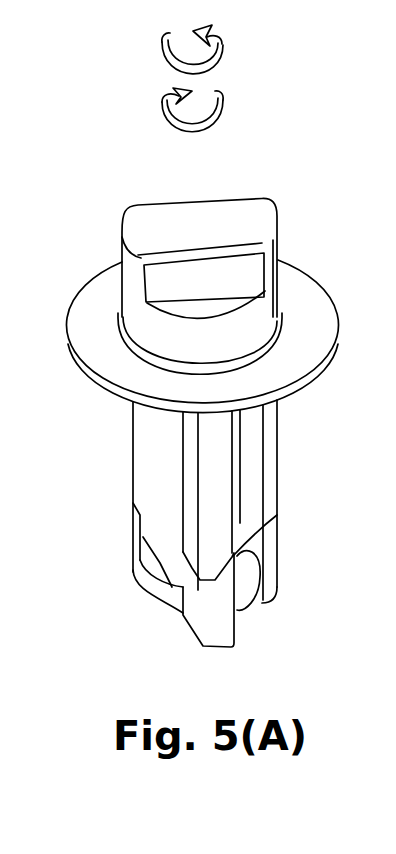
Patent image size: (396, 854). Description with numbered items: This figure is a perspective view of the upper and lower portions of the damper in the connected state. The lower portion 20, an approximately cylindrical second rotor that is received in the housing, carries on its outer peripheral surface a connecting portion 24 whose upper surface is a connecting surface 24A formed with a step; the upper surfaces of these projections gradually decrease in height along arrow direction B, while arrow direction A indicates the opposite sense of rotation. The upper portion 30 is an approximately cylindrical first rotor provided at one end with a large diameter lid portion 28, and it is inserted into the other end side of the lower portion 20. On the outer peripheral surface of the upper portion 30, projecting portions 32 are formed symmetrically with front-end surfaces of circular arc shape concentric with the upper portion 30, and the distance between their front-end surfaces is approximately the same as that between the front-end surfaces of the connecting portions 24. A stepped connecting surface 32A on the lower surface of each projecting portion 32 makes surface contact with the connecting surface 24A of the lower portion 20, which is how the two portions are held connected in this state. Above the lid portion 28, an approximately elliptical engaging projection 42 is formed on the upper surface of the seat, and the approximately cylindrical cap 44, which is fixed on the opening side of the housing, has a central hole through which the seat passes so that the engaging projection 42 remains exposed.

The arrow direction A is at (223, 56).
The arrow direction B is at (223, 113).
The lower portion 20 is at (280, 523).
The connecting portion 24 is at (213, 625).
The connecting surface 24A is at (247, 608).
The lid portion 28 is at (318, 302).
The upper portion 30 is at (287, 434).
The projecting portion 32 is at (203, 448).
The connecting surface 32A is at (141, 538).
The engaging projection 42 is at (220, 213).
The cap 44 is at (264, 317).